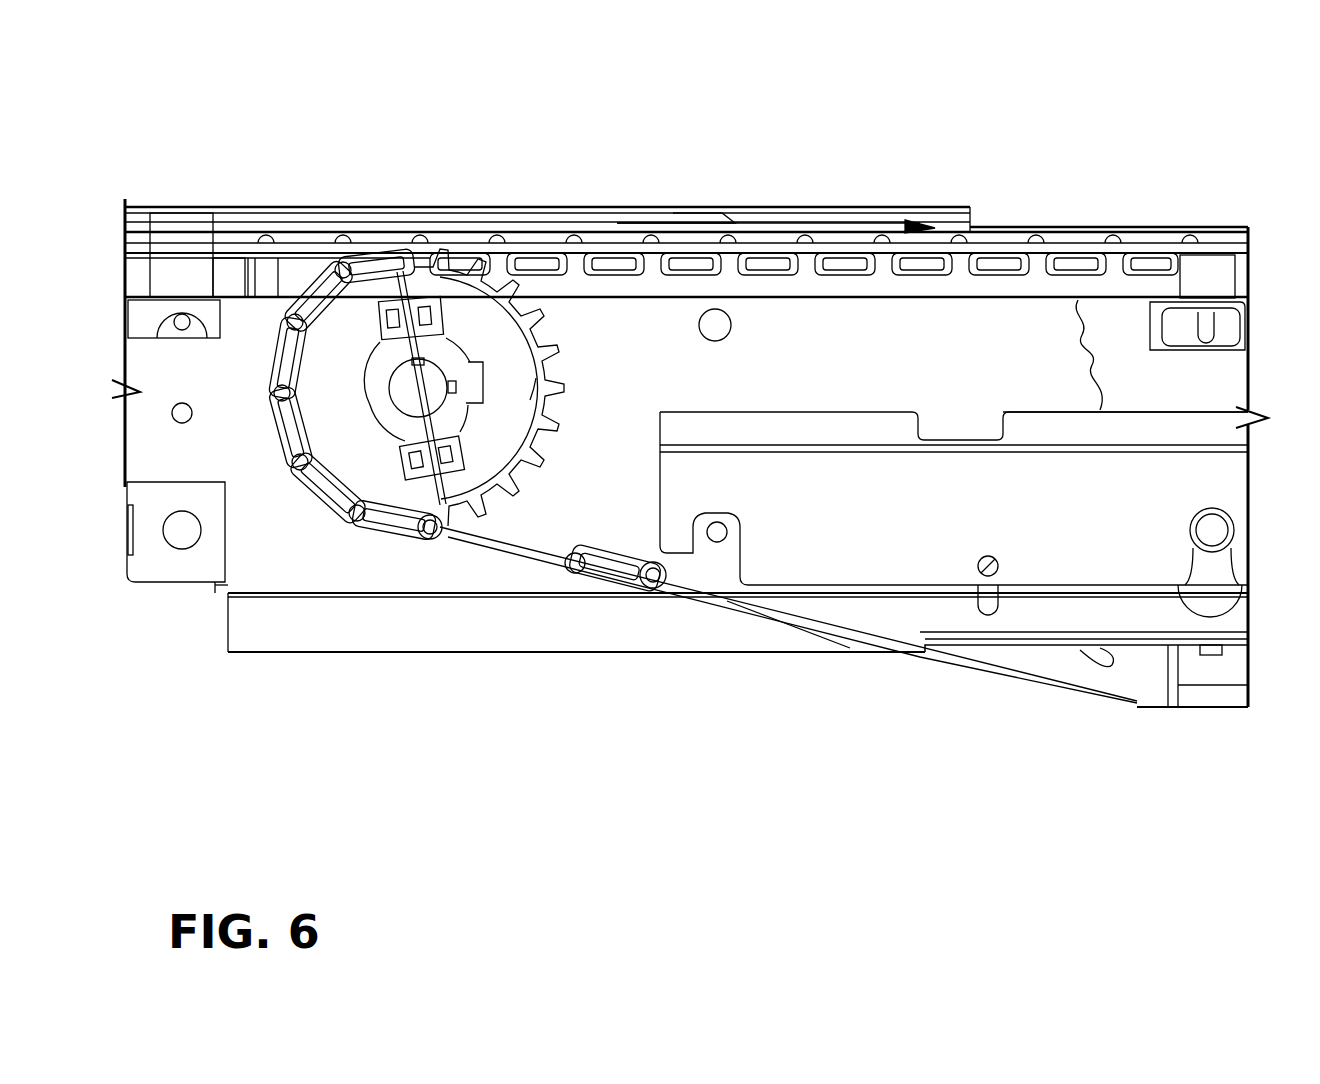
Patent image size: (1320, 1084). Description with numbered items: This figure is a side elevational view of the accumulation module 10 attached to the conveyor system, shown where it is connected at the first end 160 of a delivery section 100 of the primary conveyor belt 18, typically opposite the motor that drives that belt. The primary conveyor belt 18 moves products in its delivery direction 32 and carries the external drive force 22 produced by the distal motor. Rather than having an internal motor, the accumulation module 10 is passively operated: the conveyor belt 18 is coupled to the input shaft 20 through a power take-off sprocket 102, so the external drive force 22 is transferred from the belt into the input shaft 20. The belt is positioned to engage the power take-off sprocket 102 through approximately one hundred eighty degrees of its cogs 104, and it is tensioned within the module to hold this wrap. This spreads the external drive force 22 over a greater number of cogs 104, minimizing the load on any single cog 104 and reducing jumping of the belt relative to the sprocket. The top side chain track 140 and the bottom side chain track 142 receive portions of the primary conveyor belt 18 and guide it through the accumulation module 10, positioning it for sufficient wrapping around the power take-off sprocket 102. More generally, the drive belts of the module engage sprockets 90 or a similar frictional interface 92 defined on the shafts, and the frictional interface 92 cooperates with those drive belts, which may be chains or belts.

The accumulation module 10 is at (673, 151).
The conveyor belt 18 is at (250, 395).
The input shaft 20 is at (413, 388).
The external drive force 22 is at (676, 598).
The delivery direction 32 is at (757, 225).
The sprocket 90 is at (544, 309).
The frictional interface 92 is at (283, 496).
The delivery section 100 is at (1157, 172).
The power take-off sprocket 102 is at (470, 470).
The cog 104 is at (523, 466).
The top side chain track 140 is at (1202, 252).
The bottom side chain track 142 is at (552, 553).
The first end 160 is at (503, 193).